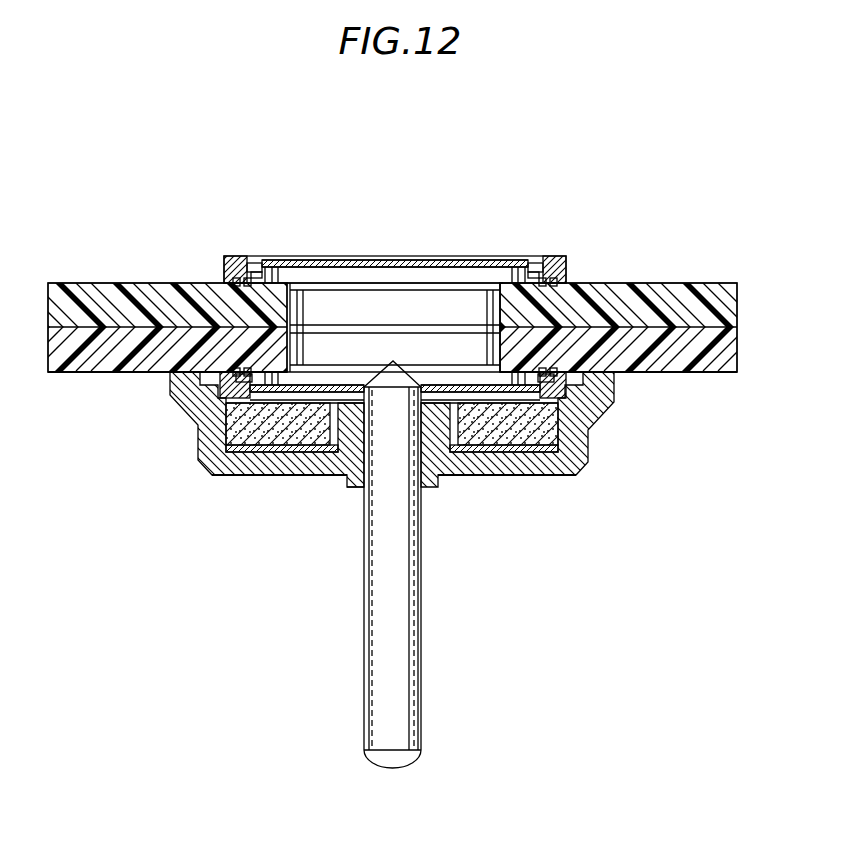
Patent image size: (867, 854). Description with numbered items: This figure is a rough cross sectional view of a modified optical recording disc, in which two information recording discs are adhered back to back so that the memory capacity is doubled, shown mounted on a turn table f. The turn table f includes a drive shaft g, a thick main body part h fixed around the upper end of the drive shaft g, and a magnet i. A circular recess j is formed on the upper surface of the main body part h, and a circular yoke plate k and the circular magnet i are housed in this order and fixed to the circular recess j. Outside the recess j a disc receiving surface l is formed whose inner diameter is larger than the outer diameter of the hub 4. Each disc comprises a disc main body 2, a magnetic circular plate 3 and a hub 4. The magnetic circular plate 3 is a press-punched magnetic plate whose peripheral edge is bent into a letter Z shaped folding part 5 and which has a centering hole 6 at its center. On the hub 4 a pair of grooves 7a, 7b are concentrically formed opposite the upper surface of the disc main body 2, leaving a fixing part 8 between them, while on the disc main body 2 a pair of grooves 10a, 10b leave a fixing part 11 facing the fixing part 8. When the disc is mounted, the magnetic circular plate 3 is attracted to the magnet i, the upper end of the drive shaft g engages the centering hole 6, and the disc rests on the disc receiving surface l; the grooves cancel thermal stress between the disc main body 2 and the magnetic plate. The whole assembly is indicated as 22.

The disc main body 2 is at (738, 296).
The magnetic circular plate 3 is at (445, 257).
The hub 4 is at (594, 392).
The folding part 5 is at (232, 403).
The centering hole 6 is at (383, 256).
The groove 7a is at (235, 367).
The groove 7b is at (248, 368).
The fixing part 8 is at (236, 368).
The groove 10a is at (238, 262).
The groove 10b is at (257, 260).
The fixing part 11 is at (248, 258).
The feedthrough assembly 22 is at (421, 330).
The turn table f is at (273, 477).
The drive shaft g is at (363, 600).
The thick main body part h is at (473, 477).
The magnet i is at (243, 440).
The circular recess j is at (548, 452).
The yoke plate k is at (318, 452).
The disc receiving surface l is at (612, 364).